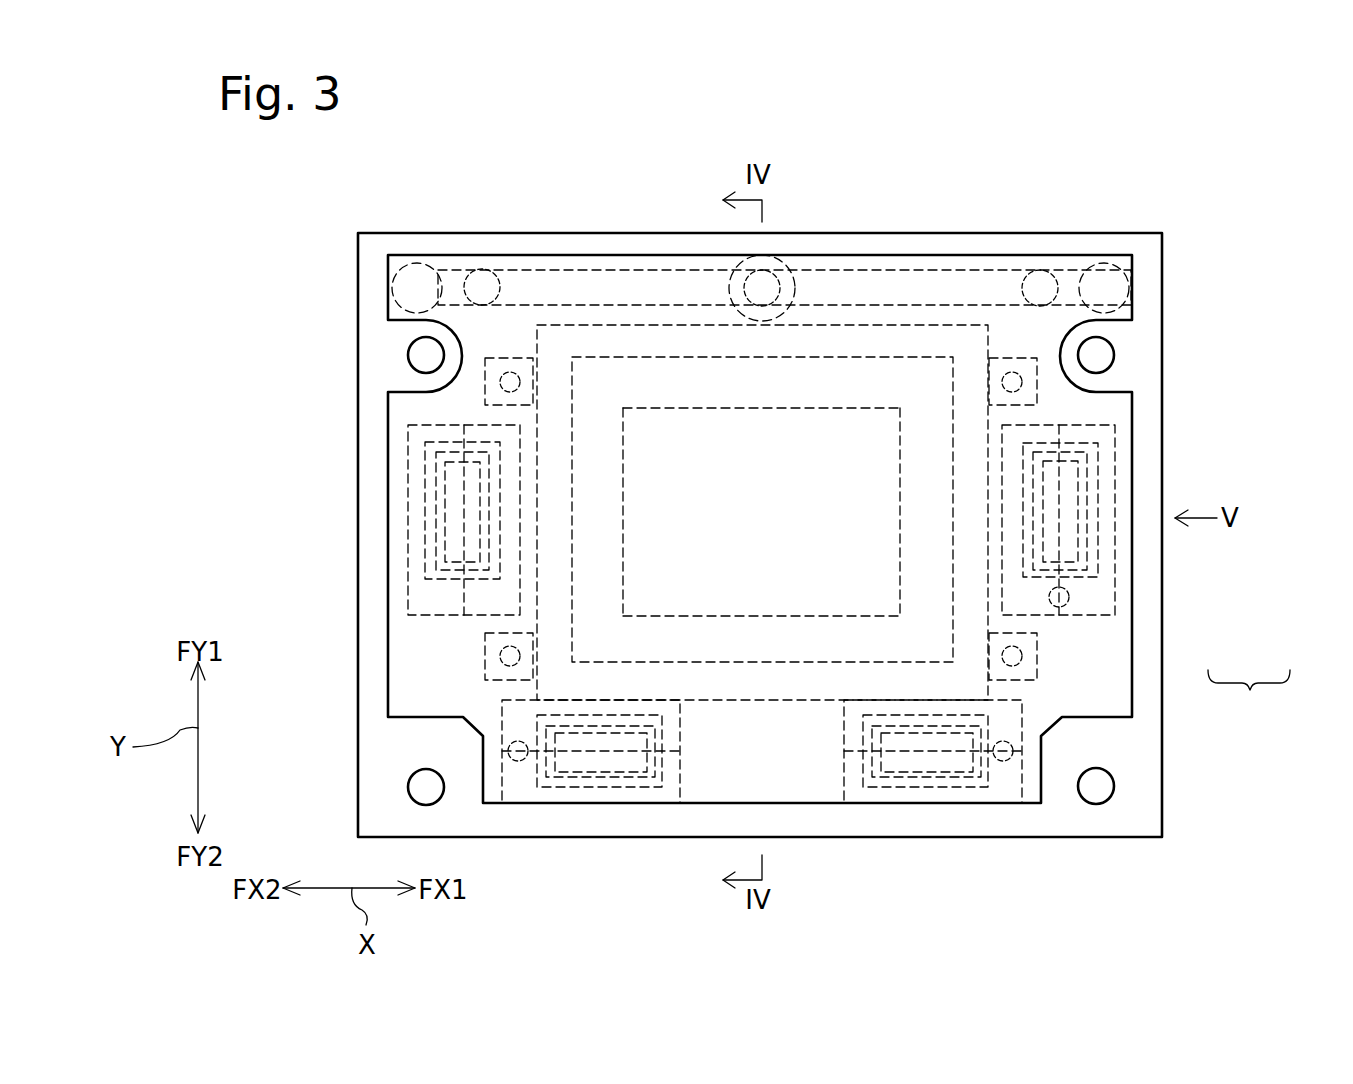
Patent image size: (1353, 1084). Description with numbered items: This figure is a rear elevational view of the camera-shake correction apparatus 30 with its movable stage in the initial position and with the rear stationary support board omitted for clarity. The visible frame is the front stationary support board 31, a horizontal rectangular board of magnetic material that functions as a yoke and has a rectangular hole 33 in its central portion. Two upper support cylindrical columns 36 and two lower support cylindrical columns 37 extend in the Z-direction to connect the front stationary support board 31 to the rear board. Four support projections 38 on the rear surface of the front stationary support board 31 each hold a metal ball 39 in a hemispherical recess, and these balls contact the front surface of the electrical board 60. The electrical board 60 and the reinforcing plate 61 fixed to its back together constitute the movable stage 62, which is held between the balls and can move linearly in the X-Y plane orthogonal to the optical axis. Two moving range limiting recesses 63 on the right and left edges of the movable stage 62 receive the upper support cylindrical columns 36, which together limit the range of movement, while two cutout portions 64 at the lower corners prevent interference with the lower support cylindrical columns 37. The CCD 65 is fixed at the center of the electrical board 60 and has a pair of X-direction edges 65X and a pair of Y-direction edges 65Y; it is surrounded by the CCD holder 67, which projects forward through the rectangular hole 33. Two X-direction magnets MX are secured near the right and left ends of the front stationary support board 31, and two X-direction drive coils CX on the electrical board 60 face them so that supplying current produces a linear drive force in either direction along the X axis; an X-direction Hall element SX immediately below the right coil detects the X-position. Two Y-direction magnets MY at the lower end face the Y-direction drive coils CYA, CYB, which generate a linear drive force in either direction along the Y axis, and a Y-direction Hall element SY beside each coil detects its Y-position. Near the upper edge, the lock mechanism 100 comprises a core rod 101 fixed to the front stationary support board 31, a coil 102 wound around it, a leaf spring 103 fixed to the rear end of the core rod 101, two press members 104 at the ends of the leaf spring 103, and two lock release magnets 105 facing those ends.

The camera-shake correction apparatus 30 is at (786, 502).
The front stationary support board 31 is at (1152, 325).
The rectangular hole 33 is at (985, 490).
The upper support cylindrical column 36 is at (422, 352).
The lower support cylindrical column 37 is at (408, 787).
The support projection 38 is at (505, 358).
The metal ball 39 is at (520, 382).
The electrical board 60 is at (840, 529).
The reinforcing plate 61 is at (1133, 672).
The movable stage 62 is at (1249, 693).
The moving range limiting recess 63 is at (400, 392).
The cutout portion 64 is at (428, 720).
The CCD 65 is at (758, 512).
The X-direction edge 65X is at (673, 408).
The Y-direction edge 65Y is at (902, 475).
The CCD holder 67 is at (710, 662).
The lock mechanism 100 is at (784, 236).
The core rod 101 is at (768, 292).
The coil 102 is at (778, 288).
The leaf spring 103 is at (945, 270).
The press member 104 is at (416, 282).
The lock release magnet 105 is at (482, 284).
The X-direction magnet MX is at (408, 590).
The X-direction drive coil CX is at (425, 485).
The X-direction Hall element SX is at (1065, 607).
The Y-direction magnet MY is at (683, 777).
The Y-direction drive coil CYA is at (615, 787).
The Y-direction drive coil CYB is at (942, 787).
The Y-direction Hall element SY is at (518, 762).